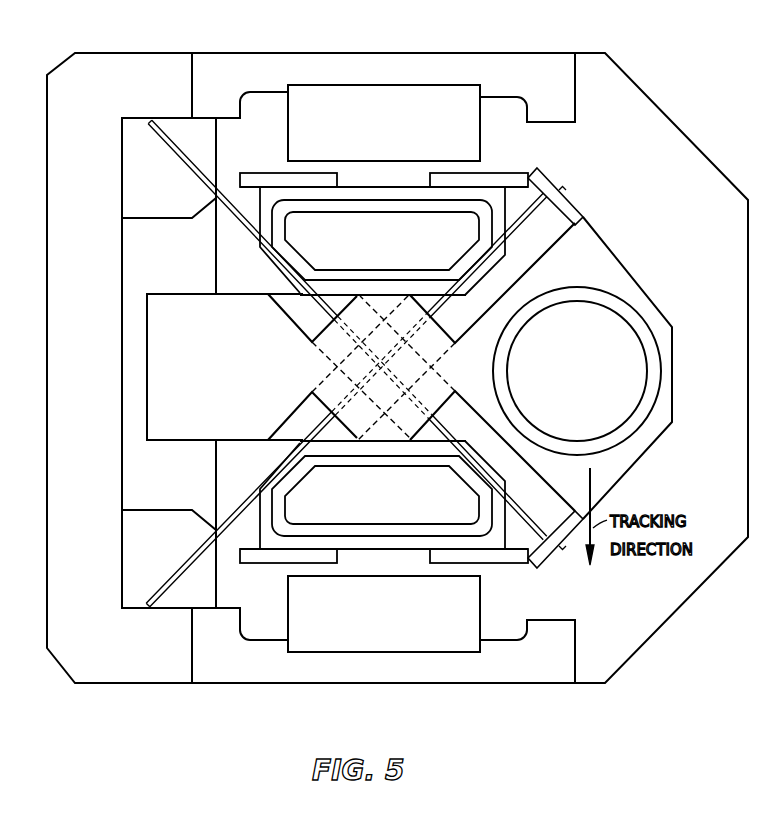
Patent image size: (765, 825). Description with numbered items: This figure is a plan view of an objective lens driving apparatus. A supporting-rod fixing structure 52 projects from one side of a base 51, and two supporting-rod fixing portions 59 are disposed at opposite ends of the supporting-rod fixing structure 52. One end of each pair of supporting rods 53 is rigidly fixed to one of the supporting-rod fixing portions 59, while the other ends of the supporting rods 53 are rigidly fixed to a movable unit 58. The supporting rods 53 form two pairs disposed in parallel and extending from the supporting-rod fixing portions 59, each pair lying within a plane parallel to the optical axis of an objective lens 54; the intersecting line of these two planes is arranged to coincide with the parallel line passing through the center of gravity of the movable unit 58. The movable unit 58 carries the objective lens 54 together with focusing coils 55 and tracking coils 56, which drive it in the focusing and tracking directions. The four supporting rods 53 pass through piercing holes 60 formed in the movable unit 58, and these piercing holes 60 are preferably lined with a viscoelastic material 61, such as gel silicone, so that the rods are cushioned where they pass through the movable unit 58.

The base 51 is at (648, 107).
The supporting-rod fixing structure 52 is at (113, 53).
The supporting rods 53 is at (223, 207).
The objective lens 54 is at (587, 374).
The focusing coils 55 is at (398, 560).
The tracking coils 56 is at (512, 558).
The movable unit 58 is at (597, 260).
The supporting-rod fixing portions 59 is at (202, 130).
The piercing holes 60 is at (448, 388).
The viscoelastic material 61 is at (434, 345).